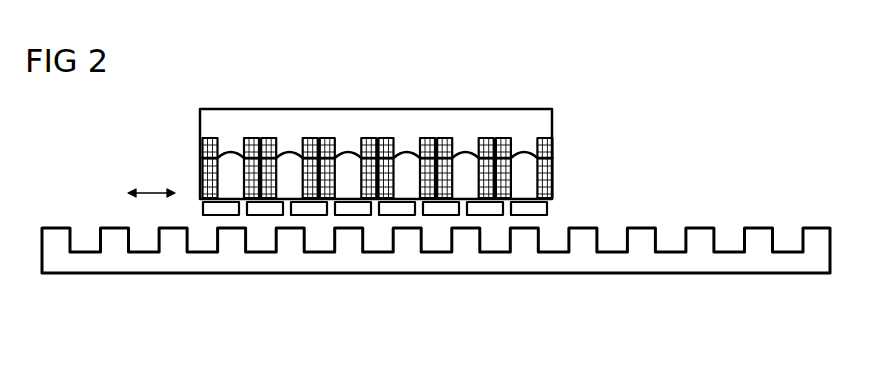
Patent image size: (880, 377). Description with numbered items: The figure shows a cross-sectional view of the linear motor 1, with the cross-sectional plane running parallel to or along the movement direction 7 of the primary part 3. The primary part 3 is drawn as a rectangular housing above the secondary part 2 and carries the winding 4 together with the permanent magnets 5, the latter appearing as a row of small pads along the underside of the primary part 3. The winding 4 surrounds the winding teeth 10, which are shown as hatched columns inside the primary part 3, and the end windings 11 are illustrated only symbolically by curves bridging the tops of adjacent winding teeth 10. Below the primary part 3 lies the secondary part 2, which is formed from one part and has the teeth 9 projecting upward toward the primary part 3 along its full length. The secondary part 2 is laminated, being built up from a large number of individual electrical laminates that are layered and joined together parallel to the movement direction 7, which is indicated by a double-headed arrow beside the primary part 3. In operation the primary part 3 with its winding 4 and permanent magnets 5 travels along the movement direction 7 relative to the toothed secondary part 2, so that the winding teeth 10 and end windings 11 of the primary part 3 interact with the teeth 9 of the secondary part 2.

The linear motor 1 is at (667, 123).
The secondary part 2 is at (468, 270).
The primary part 3 is at (172, 126).
The winding 4 is at (545, 168).
The permanent magnets 5 is at (537, 206).
The movement direction 7 is at (153, 191).
The teeth 9 is at (638, 232).
The winding teeth 10 is at (402, 148).
The end windings 11 is at (522, 151).